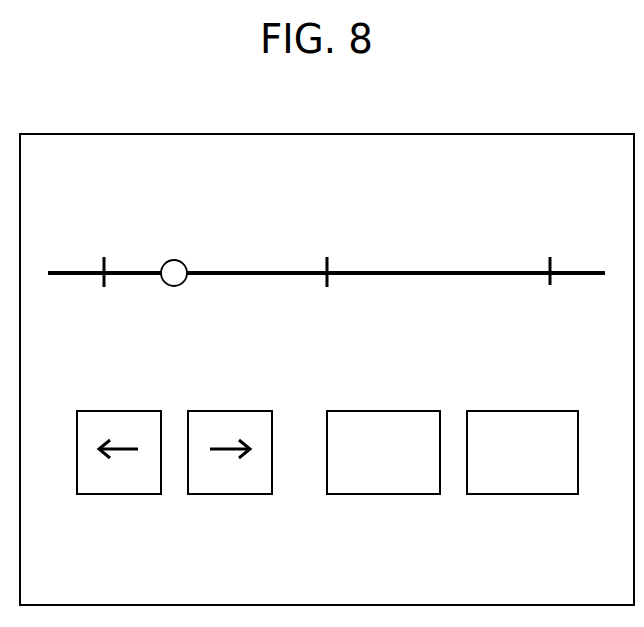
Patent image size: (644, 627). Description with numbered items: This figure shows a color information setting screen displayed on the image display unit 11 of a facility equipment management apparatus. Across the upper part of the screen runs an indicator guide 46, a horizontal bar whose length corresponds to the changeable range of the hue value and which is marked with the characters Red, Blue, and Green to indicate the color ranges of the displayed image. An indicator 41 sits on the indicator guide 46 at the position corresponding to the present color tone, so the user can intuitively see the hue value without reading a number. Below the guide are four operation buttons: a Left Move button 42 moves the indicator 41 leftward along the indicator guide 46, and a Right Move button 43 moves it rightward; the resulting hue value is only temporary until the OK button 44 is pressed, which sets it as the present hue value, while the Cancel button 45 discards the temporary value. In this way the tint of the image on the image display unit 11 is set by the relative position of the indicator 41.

The image display unit 11 is at (504, 134).
The indicator 41 is at (168, 261).
The Left Move button 42 is at (120, 495).
The Right Move button 43 is at (232, 495).
The OK button 44 is at (385, 495).
The Cancel button 45 is at (524, 495).
The indicator guide 46 is at (570, 268).